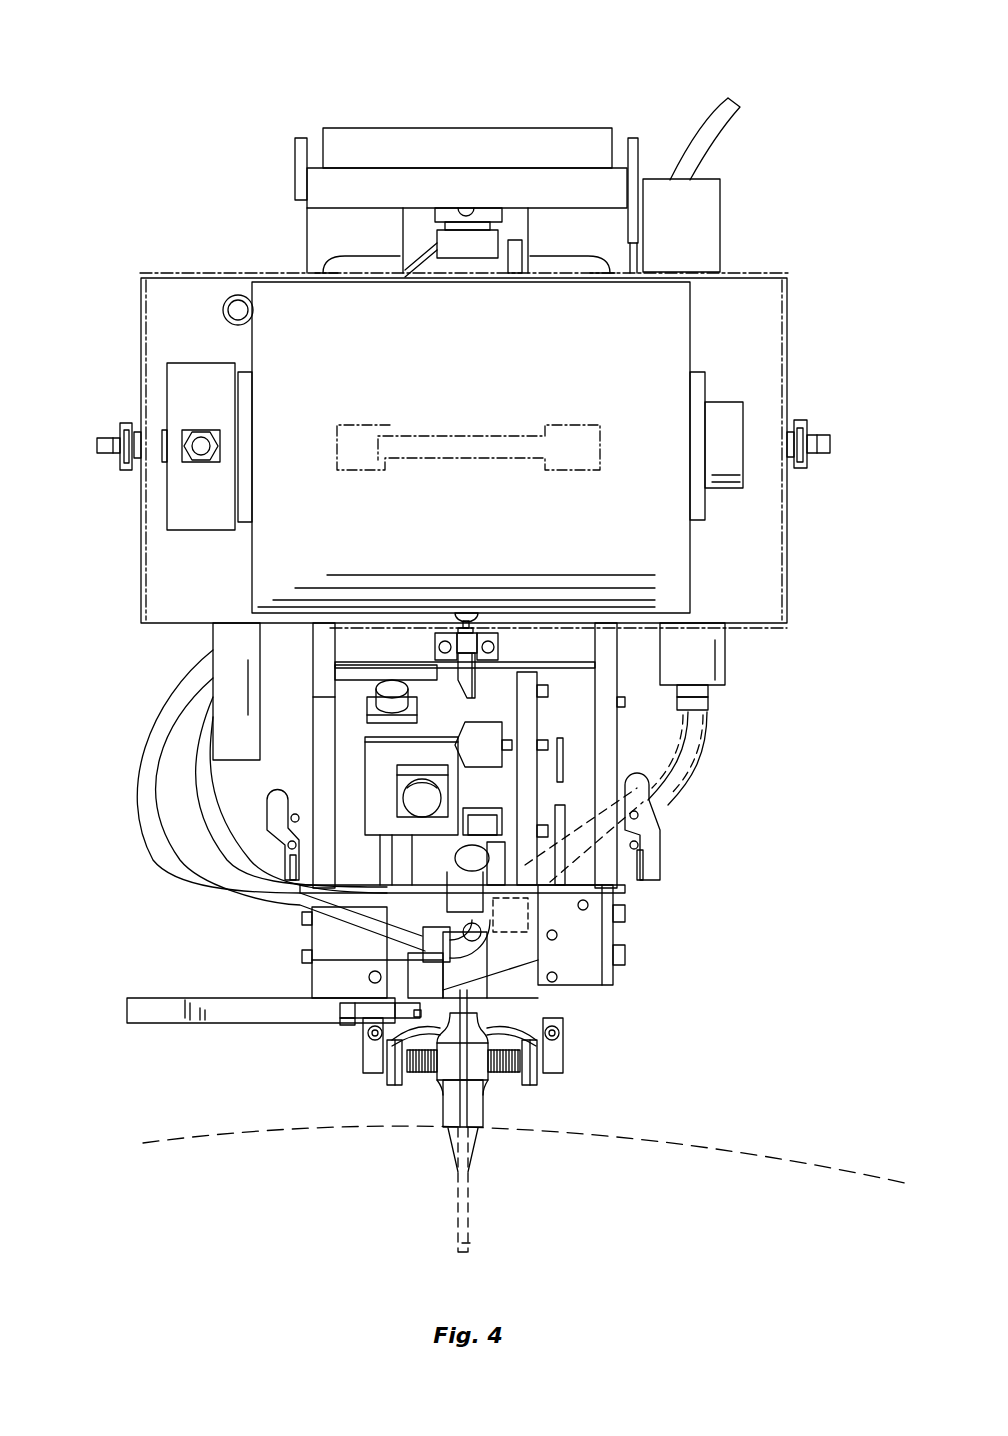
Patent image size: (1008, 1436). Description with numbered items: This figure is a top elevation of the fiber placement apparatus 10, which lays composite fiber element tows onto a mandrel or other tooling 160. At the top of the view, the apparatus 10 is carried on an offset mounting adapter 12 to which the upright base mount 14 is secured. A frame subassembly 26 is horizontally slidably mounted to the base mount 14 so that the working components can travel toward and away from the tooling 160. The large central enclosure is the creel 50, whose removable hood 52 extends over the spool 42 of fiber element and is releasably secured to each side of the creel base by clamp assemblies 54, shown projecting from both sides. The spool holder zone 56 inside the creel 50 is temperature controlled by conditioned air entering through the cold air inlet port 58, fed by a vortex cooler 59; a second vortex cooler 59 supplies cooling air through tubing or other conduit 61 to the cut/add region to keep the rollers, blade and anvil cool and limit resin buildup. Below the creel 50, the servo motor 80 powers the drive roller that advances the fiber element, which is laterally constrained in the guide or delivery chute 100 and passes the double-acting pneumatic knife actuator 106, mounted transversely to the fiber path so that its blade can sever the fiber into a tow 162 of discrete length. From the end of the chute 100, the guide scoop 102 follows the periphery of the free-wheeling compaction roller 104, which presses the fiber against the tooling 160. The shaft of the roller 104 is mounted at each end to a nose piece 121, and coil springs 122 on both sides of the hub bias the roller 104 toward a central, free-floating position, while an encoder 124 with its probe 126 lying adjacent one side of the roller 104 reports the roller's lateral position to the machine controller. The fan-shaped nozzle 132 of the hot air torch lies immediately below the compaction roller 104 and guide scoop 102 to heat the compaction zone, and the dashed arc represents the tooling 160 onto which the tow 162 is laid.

The fiber placement apparatus 10 is at (550, 76).
The offset mounting adapter 12 is at (612, 130).
The upright base mount 14 is at (642, 145).
The frame subassembly 26 is at (605, 740).
The spool 42 is at (662, 556).
The creel 50 is at (814, 360).
The removable hood 52 is at (787, 543).
The clamp assemblies 54 is at (830, 443).
The spool holder zone 56 is at (760, 517).
The cold air inlet port 58 is at (236, 302).
The vortex cooler 59 is at (227, 635).
The tubing or other conduit 61 is at (650, 850).
The servo motor 80 is at (373, 762).
The guide or delivery chute 100 is at (485, 1000).
The guide scoop 102 is at (487, 1092).
The compaction or delivery roller 104 is at (310, 980).
The double-acting pneumatic knife actuator 106 is at (550, 912).
The nose piece 121 is at (363, 1027).
The coil springs 122 is at (420, 1070).
The encoder 124 is at (140, 1020).
The probe 126 is at (335, 1022).
The fan-shaped nozzle 132 is at (682, 782).
The tooling 160 is at (820, 1160).
The tow 162 is at (468, 1243).